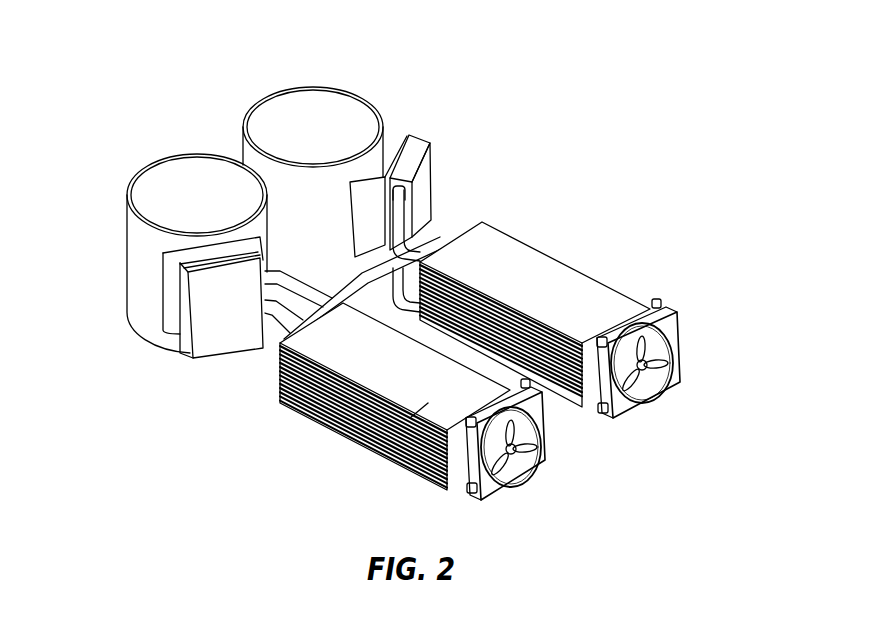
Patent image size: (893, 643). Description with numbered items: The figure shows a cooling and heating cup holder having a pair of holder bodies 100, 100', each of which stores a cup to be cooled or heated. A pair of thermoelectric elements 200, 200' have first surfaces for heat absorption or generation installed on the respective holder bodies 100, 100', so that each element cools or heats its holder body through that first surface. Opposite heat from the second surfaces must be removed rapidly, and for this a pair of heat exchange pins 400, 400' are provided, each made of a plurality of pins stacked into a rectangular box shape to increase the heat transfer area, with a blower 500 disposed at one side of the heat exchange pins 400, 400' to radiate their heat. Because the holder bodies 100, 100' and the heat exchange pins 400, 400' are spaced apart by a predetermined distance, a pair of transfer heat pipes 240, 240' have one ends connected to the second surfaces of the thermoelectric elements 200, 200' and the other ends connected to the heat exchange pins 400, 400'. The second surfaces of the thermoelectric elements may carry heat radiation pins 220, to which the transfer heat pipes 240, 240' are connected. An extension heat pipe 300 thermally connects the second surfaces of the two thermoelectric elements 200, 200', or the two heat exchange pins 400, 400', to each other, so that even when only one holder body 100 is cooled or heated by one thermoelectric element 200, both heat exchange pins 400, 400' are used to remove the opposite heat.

The holder body 100 is at (299, 104).
The holder body 100' is at (154, 250).
The thermoelectric element 200 is at (402, 153).
The thermoelectric element 200' is at (159, 297).
The heat radiation pin 220 is at (421, 145).
The transfer heat pipe 240 is at (461, 241).
The transfer heat pipe 240' is at (262, 358).
The extension heat pipe 300 is at (350, 283).
The heat exchange pin 400 is at (535, 311).
The heat exchange pin 400' is at (395, 408).
The blower 500 is at (676, 323).